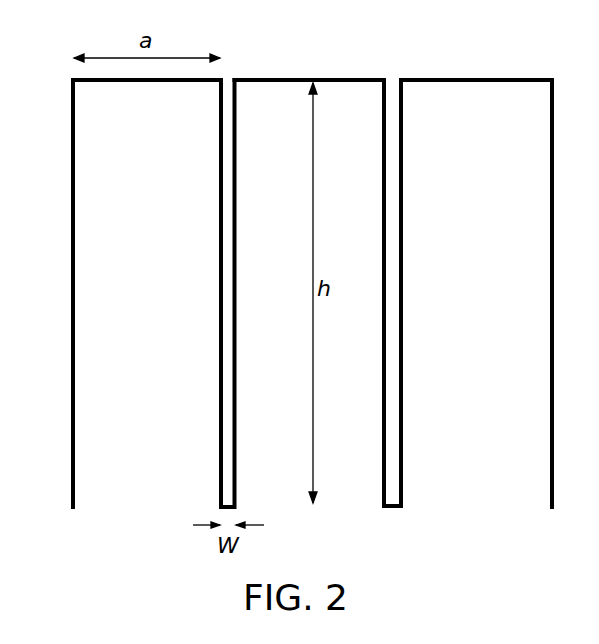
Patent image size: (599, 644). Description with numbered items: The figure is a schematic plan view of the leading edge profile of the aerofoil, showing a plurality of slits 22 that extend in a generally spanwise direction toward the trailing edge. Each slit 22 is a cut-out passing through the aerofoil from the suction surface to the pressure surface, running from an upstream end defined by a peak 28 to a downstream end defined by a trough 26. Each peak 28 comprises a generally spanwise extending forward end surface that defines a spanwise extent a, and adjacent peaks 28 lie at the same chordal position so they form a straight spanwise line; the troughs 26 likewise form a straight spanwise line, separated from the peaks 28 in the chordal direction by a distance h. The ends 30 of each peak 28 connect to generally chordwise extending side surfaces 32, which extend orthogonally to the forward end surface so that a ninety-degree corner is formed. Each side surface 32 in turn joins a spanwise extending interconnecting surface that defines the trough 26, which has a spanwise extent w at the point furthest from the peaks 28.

The slit 22 is at (229, 229).
The trough 26 is at (395, 508).
The peak 28 is at (473, 80).
The end of peak 30 is at (73, 80).
The side surface 32 is at (402, 256).